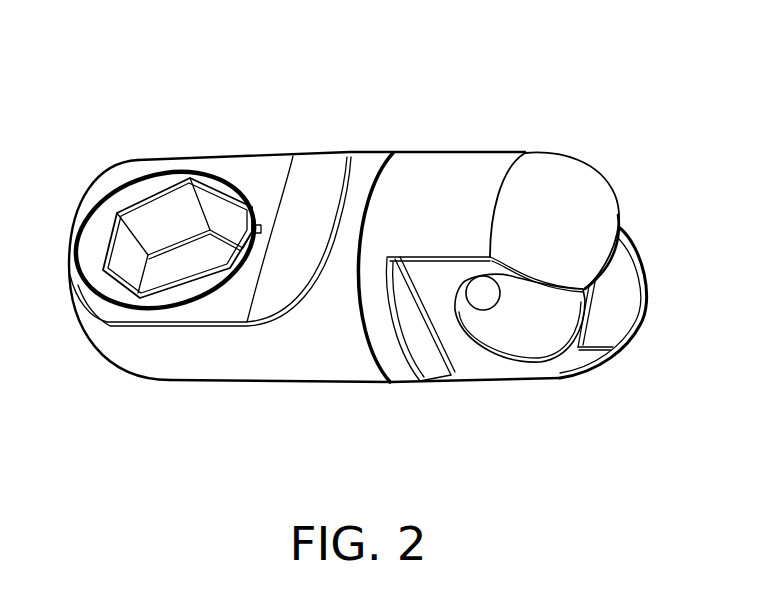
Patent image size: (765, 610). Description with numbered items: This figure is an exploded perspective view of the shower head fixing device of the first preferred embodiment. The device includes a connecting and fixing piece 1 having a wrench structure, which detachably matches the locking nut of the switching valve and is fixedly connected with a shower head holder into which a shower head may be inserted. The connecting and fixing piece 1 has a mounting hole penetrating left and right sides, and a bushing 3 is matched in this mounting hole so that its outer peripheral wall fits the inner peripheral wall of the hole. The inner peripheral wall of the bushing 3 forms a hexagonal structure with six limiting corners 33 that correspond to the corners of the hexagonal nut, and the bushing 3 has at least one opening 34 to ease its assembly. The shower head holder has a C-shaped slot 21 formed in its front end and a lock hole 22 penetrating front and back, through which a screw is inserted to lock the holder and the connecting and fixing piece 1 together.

The connecting and fixing piece 1 is at (223, 358).
The bushing 3 is at (222, 185).
The limiting corner 33 is at (163, 210).
The opening 34 is at (243, 230).
The C-shaped slot 21 is at (537, 332).
The lock hole 22 is at (481, 289).